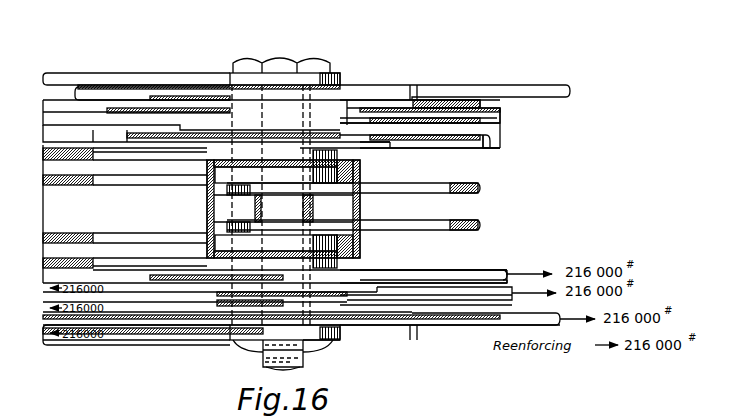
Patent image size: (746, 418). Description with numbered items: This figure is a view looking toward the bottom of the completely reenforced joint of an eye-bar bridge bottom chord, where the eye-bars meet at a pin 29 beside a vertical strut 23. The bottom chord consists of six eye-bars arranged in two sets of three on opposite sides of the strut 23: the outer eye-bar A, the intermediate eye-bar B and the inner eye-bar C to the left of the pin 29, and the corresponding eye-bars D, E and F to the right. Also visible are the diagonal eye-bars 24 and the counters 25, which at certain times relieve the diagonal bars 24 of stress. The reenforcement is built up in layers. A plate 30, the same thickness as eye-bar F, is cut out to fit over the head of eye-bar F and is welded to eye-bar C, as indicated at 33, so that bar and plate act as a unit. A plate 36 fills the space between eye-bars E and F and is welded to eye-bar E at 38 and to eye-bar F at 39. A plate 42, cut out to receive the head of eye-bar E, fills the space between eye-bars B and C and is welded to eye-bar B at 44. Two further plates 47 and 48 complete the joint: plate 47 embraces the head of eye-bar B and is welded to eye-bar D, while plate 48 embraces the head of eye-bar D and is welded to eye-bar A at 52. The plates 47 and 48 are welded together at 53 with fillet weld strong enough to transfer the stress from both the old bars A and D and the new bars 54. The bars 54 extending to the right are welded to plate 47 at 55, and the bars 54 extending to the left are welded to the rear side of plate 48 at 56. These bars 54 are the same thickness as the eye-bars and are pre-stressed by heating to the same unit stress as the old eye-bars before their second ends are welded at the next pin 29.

The vertical strut 23 is at (366, 176).
The diagonal eye-bar 24 is at (53, 260).
The counter 25 is at (392, 220).
The pin 29 is at (289, 362).
The plate 30 is at (143, 147).
The weld 33 is at (182, 140).
The plate 36 is at (432, 143).
The weld 38 is at (467, 137).
The weld 39 is at (480, 143).
The plate 42 is at (118, 118).
The weld 44 is at (170, 108).
The plate 47 is at (388, 105).
The plate 48 is at (165, 93).
The weld 52 is at (158, 90).
The weld 53 is at (358, 97).
The reenforcing bar 54 is at (42, 100).
The weld 55 is at (462, 140).
The weld 56 is at (80, 106).
The outer eye-bar A is at (133, 82).
The intermediate eye-bar B is at (95, 113).
The inner eye-bar C is at (62, 133).
The eye-bar D is at (375, 92).
The eye-bar E is at (437, 113).
The eye-bar F is at (477, 100).